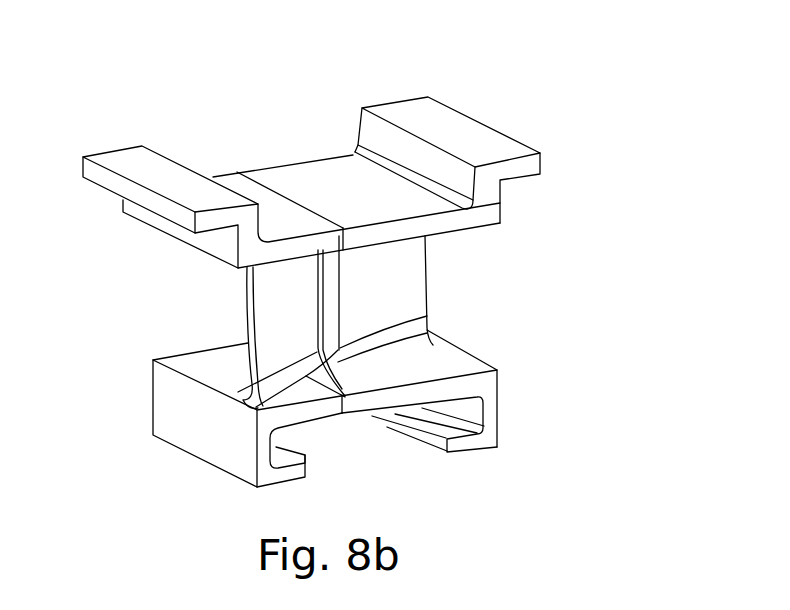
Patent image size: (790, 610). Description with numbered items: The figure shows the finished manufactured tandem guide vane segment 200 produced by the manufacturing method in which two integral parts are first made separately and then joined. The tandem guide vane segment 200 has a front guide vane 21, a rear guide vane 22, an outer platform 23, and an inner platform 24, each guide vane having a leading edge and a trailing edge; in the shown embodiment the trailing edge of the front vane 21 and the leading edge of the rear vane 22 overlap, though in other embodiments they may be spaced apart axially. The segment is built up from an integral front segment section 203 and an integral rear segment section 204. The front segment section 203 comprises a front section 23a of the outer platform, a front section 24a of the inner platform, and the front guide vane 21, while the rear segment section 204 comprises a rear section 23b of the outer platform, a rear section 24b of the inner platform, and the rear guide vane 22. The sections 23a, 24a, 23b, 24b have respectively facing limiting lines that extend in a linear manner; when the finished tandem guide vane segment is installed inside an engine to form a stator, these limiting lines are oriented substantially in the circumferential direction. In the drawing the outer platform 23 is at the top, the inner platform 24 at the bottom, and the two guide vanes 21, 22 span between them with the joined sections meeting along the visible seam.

The tandem guide vane segment 200 is at (294, 125).
The front segment section 203 is at (122, 139).
The rear segment section 204 is at (479, 110).
The front guide vane 21 is at (248, 293).
The rear guide vane 22 is at (428, 277).
The outer platform 23 is at (243, 172).
The front section of the outer platform 23a is at (168, 152).
The rear section of the outer platform 23b is at (330, 158).
The inner platform 24 is at (368, 418).
The front section of the inner platform 24a is at (330, 420).
The rear section of the inner platform 24b is at (498, 384).